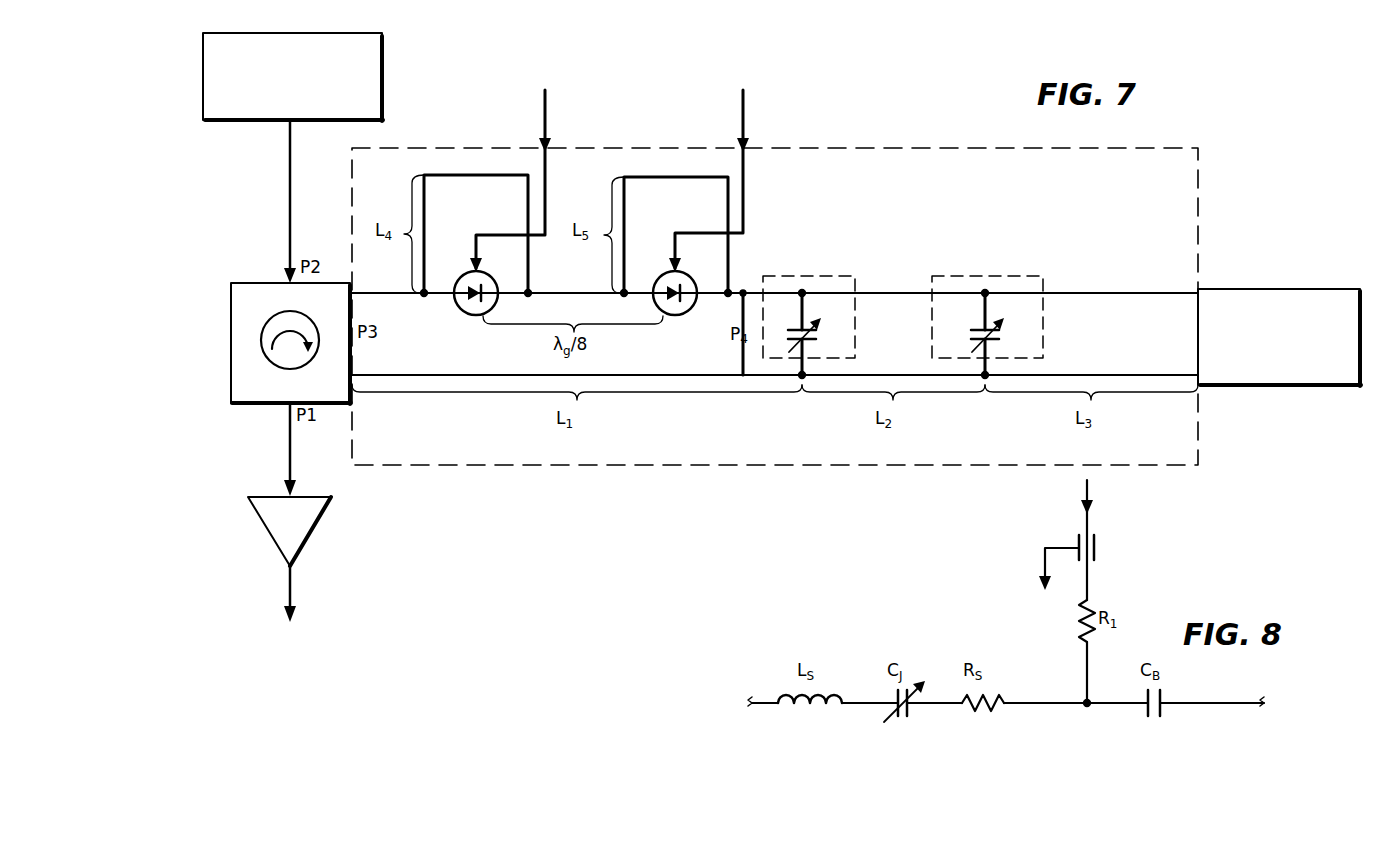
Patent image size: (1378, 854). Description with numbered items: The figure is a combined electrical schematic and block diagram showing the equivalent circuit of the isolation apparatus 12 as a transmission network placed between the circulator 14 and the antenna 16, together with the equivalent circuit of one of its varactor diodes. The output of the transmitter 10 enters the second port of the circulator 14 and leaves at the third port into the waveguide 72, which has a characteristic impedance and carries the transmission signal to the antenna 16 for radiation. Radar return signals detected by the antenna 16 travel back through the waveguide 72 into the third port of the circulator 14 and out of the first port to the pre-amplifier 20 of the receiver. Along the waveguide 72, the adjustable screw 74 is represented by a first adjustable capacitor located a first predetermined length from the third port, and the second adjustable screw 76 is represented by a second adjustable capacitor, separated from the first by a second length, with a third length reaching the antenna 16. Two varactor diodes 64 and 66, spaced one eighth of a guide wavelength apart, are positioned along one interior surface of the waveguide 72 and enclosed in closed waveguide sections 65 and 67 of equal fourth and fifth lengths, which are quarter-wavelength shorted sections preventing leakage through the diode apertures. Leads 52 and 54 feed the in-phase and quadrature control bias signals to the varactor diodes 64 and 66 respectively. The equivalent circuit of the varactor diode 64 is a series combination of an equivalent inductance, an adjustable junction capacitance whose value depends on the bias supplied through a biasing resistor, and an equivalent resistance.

The transmitter 10 is at (356, 34).
The isolation apparatus 12 is at (962, 146).
The circulator 14 is at (255, 283).
The antenna 16 is at (1322, 288).
The pre-amplifier 20 is at (310, 500).
The lead 52 is at (556, 148).
The lead 54 is at (754, 148).
The varactor diode 64 is at (488, 278).
The waveguide section 65 is at (474, 174).
The varactor diode 66 is at (686, 278).
The waveguide section 67 is at (660, 176).
The waveguide 72 is at (712, 375).
The adjustable screw 74 is at (844, 276).
The adjustable screw 76 is at (1034, 276).